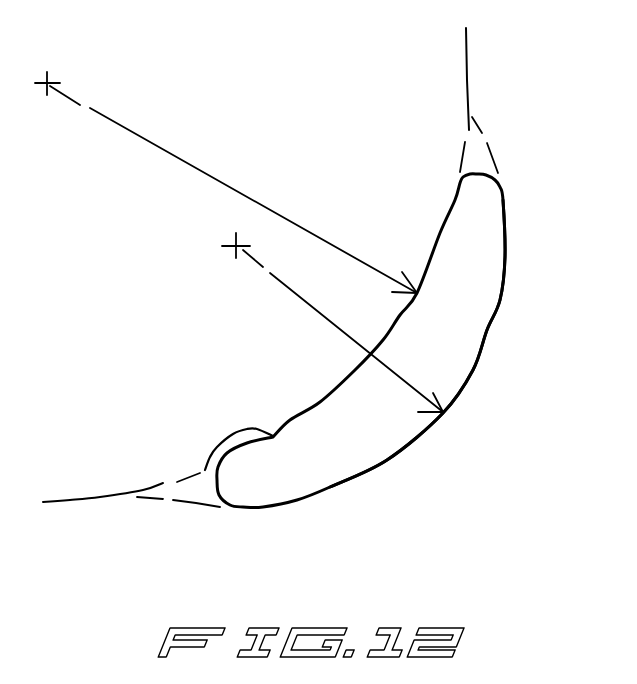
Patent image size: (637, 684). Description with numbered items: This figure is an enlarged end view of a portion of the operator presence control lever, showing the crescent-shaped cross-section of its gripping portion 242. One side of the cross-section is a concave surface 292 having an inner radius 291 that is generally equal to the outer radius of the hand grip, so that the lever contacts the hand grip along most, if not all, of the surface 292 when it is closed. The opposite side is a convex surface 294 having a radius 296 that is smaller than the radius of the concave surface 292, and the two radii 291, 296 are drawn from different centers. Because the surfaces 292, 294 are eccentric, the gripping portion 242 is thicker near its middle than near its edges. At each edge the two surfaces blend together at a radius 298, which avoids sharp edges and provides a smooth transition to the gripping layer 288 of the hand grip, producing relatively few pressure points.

The gripping portion 242 is at (477, 368).
The gripping layer 288 is at (469, 61).
The inner radius 291 is at (177, 155).
The concave surface 292 is at (205, 470).
The convex surface 294 is at (477, 368).
The radius 296 is at (320, 319).
The radius 298 is at (480, 173).